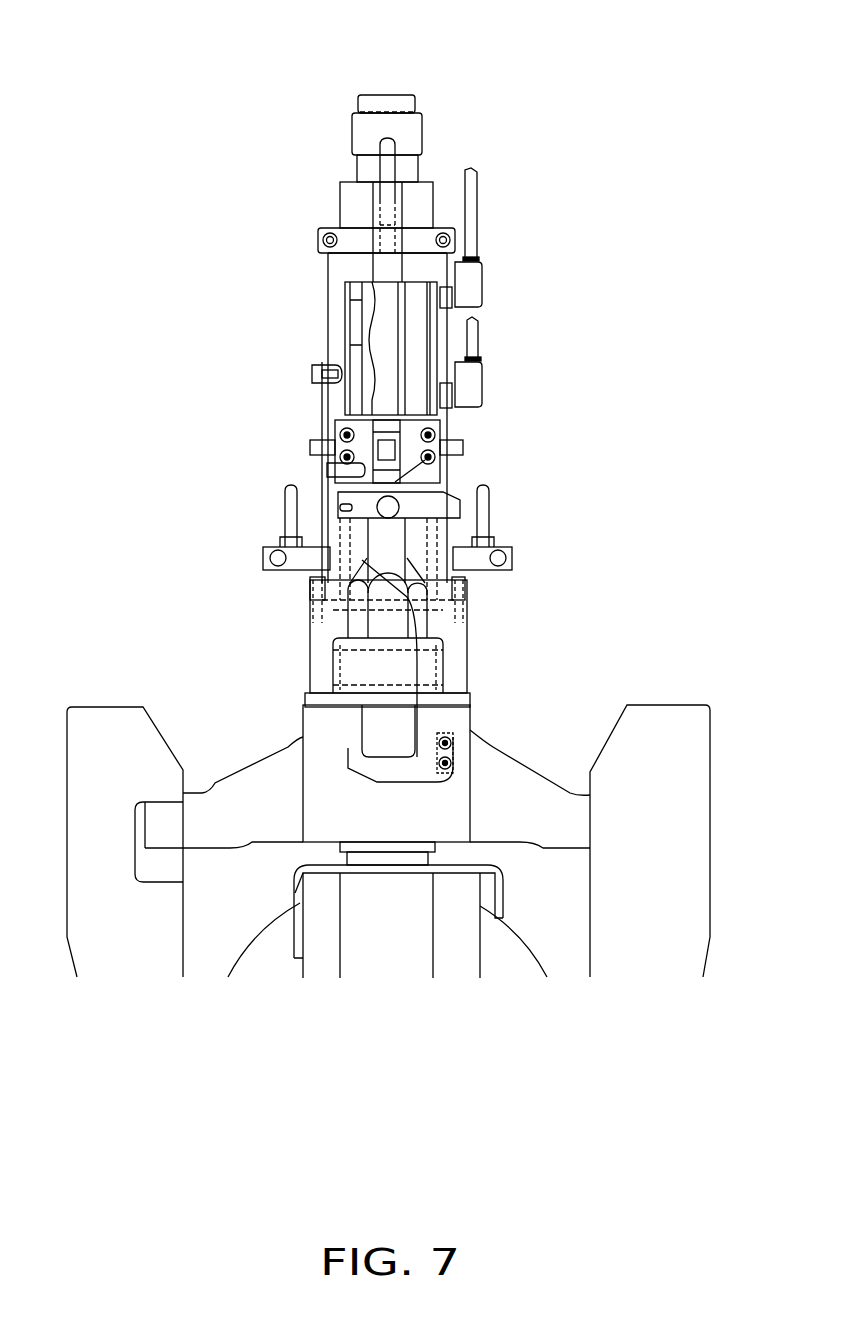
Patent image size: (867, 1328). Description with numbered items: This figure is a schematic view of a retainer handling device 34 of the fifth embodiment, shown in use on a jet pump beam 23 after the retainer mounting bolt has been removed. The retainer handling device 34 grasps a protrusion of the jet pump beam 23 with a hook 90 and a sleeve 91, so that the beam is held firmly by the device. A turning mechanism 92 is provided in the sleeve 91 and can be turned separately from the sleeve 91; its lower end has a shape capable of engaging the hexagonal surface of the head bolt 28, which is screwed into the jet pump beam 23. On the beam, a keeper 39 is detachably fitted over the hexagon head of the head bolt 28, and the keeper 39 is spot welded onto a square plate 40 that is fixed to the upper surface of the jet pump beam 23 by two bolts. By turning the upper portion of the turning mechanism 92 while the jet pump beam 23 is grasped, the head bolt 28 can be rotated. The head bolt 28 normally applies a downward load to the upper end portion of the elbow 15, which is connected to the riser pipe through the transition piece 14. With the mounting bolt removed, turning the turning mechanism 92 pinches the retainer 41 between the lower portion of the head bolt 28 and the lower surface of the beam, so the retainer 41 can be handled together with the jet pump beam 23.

The retainer handling device 34 is at (470, 108).
The turning mechanism 92 is at (327, 308).
The head bolt 28 is at (380, 573).
The sleeve 91 is at (310, 655).
The keeper 39 is at (430, 652).
The plate 40 is at (470, 694).
The hook 90 is at (347, 753).
The jet pump beam 23 is at (493, 763).
The transition piece 14 is at (112, 705).
The retainer 41 is at (285, 935).
The elbow 15 is at (328, 925).